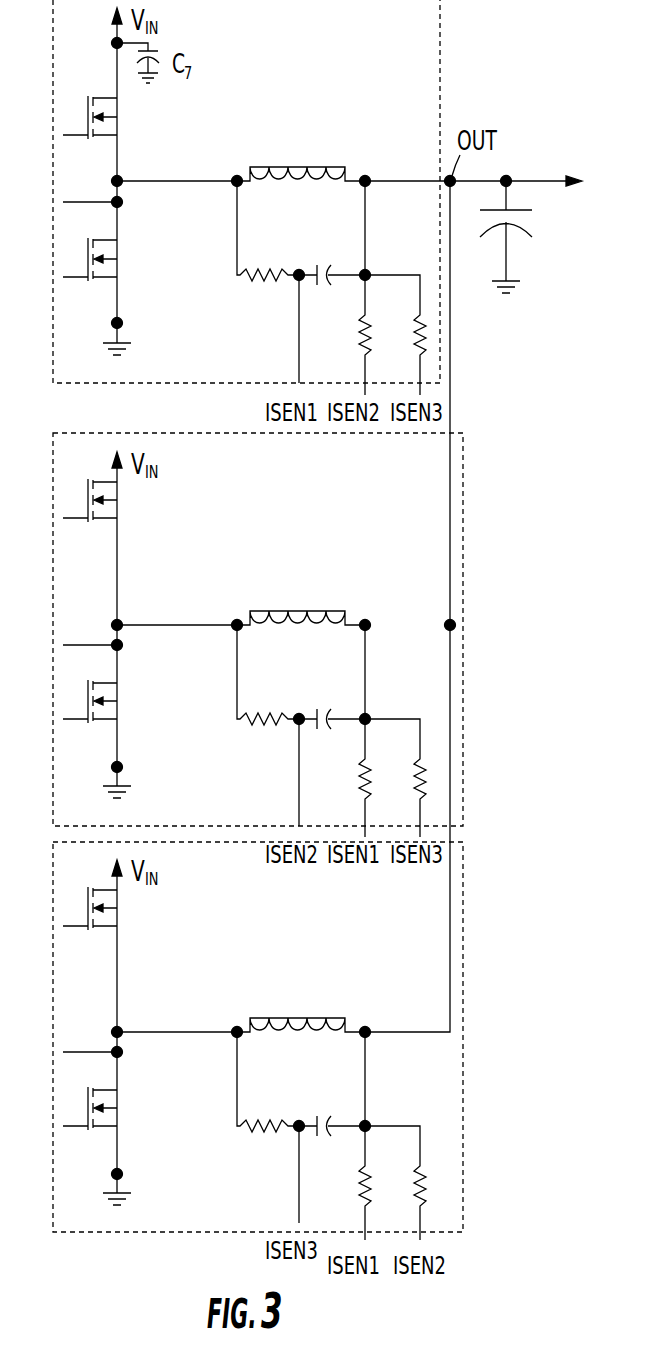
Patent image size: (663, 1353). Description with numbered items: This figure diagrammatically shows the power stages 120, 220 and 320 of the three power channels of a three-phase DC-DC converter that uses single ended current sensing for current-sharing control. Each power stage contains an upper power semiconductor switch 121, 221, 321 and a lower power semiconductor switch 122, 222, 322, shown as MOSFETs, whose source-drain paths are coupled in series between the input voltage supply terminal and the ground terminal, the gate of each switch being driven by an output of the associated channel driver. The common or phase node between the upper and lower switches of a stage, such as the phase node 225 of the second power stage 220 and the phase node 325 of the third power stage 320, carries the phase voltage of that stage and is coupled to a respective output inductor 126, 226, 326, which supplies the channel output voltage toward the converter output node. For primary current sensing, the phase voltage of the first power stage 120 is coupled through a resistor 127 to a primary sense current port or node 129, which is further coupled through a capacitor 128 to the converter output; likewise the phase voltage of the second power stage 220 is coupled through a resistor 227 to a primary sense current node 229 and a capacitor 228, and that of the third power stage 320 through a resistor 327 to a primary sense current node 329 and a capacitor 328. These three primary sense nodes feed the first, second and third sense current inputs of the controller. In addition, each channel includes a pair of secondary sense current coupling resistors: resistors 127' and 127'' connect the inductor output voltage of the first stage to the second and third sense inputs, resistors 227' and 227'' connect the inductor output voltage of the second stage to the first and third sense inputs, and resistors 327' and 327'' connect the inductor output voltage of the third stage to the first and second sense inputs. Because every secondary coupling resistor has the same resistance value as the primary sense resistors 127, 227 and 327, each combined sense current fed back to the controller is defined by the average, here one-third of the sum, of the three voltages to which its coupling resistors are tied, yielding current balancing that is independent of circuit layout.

The power stage 120 is at (440, 78).
The high-side transistor 121 is at (127, 118).
The low-side transistor 122 is at (127, 258).
The phase node 225 is at (120, 180).
The output inductor 126 is at (268, 184).
The resistor 127 is at (262, 265).
The secondary sense current coupling resistor 127' is at (390, 288).
The secondary sense current coupling resistor 127'' is at (406, 299).
The capacitor 128 is at (327, 300).
The primary sense current port 129 is at (297, 270).
The power stage 220 is at (463, 478).
The high-side transistor 221 is at (127, 501).
The low-side transistor 222 is at (127, 700).
The output inductor 226 is at (268, 628).
The resistor 227 is at (262, 709).
The secondary sense current coupling resistor 227' is at (390, 731).
The secondary sense current coupling resistor 227'' is at (406, 741).
The capacitor 228 is at (327, 744).
The primary sense current port 229 is at (297, 714).
The power stage 320 is at (463, 887).
The high-side transistor 321 is at (127, 909).
The low-side transistor 322 is at (127, 1108).
The phase node 325 is at (120, 1030).
The output inductor 326 is at (268, 1035).
The resistor 327 is at (262, 1116).
The secondary sense current coupling resistor 327' is at (390, 1136).
The secondary sense current coupling resistor 327'' is at (406, 1145).
The capacitor 328 is at (327, 1151).
The primary sense current port 329 is at (297, 1121).